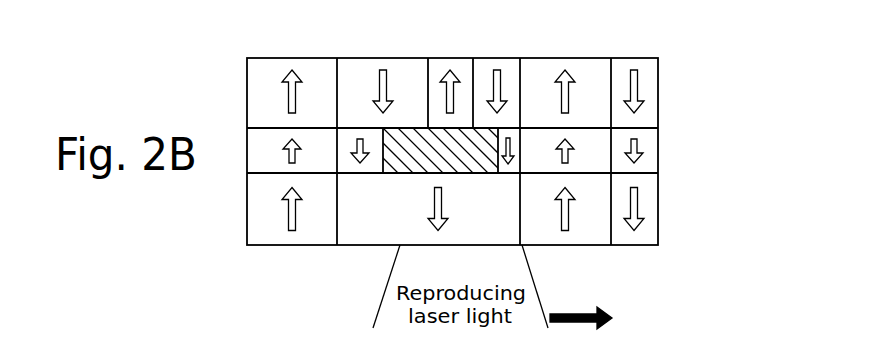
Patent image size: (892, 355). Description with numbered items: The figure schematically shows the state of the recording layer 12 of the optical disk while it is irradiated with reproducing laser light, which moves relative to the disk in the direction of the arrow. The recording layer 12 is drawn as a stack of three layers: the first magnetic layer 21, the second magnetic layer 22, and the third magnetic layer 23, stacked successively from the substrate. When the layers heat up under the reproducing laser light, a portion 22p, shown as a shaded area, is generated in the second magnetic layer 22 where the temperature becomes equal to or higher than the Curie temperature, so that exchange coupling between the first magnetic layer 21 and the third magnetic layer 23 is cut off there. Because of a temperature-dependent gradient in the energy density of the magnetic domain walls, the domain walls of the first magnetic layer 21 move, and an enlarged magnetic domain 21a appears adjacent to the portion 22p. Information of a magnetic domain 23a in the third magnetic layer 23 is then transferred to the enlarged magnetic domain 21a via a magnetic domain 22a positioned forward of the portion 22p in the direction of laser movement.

The recording layer 12 is at (752, 82).
The first magnetic layer 21 is at (703, 173).
The second magnetic layer 22 is at (703, 128).
The third magnetic layer 23 is at (703, 58).
The enlarged magnetic domain 21a is at (355, 235).
The magnetic domain 22a is at (512, 165).
The portion 22p is at (405, 128).
The magnetic domain 23a is at (495, 63).